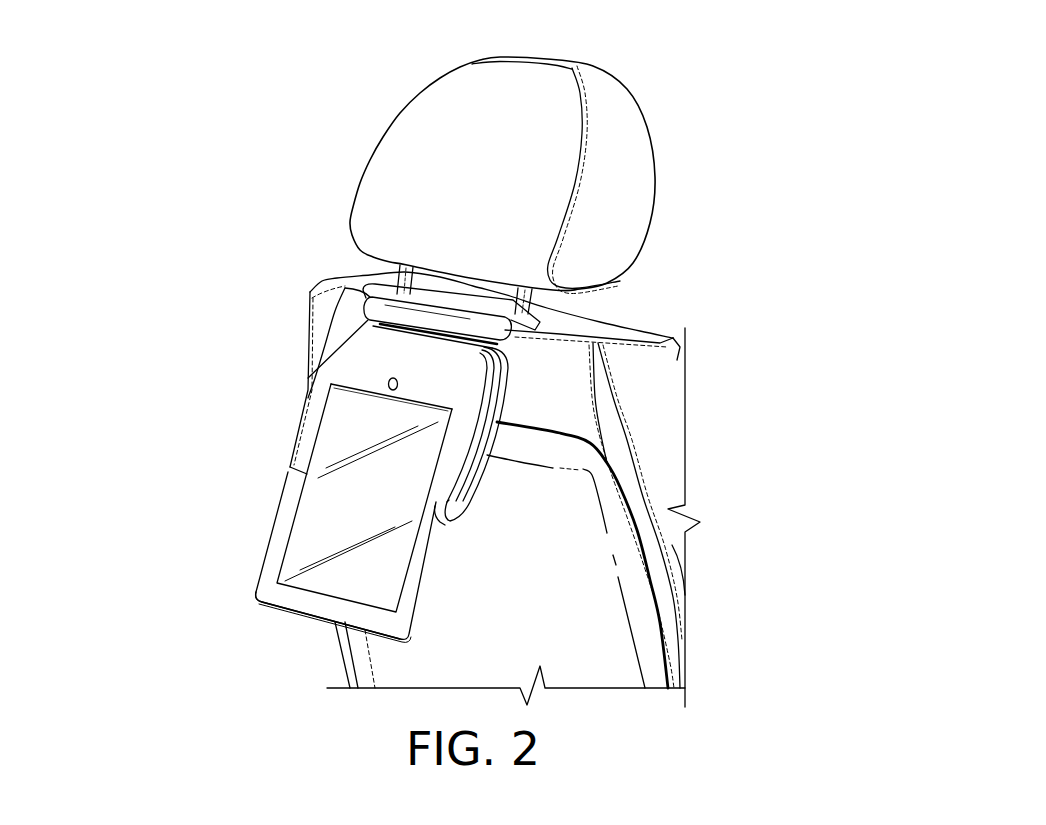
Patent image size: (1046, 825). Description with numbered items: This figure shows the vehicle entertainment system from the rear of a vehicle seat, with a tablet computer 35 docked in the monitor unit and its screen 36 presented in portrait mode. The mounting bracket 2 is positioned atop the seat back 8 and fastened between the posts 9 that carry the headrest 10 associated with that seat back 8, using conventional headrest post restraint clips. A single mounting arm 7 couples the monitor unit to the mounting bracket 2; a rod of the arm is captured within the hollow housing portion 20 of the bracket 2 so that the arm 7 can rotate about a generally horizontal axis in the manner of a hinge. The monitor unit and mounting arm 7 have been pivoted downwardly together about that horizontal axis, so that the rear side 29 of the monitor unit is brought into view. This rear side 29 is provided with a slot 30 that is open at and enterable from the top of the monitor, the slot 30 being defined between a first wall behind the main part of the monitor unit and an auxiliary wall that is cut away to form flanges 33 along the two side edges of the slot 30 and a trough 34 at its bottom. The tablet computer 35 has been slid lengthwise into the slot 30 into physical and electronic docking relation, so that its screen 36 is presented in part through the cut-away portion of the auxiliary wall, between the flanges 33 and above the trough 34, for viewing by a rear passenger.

The headrest 10 is at (640, 184).
The hollow housing portion 20 is at (430, 315).
The mounting bracket 2 is at (513, 344).
The mounting arm 7 is at (347, 305).
The posts 9 is at (552, 309).
The seat back 8 is at (620, 340).
The rear side 29 is at (332, 357).
The trough 34 is at (350, 398).
The screen 36 is at (310, 535).
The tablet computer 35 is at (287, 595).
The slot 30 is at (436, 510).
The flanges 33 is at (457, 455).